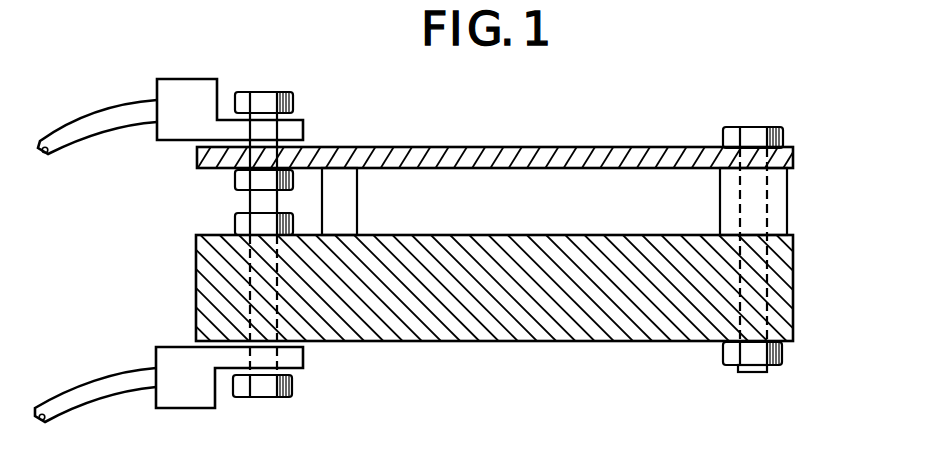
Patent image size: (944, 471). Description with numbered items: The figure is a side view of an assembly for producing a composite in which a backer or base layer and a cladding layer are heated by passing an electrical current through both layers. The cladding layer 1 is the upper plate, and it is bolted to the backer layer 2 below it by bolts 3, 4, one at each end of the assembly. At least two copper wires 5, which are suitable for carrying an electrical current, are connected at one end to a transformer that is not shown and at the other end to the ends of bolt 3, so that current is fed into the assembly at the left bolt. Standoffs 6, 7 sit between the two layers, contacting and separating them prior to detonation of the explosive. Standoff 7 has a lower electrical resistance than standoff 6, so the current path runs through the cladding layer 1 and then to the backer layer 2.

The cladding layer 1 is at (560, 147).
The backer layer 2 is at (793, 267).
The bolt 3 is at (270, 400).
The bolt 4 is at (775, 127).
The copper wires 5 is at (118, 102).
The standoff 6 is at (357, 192).
The standoff 7 is at (720, 195).